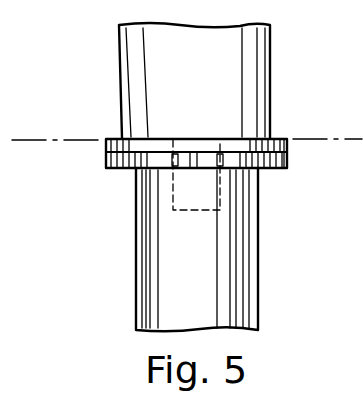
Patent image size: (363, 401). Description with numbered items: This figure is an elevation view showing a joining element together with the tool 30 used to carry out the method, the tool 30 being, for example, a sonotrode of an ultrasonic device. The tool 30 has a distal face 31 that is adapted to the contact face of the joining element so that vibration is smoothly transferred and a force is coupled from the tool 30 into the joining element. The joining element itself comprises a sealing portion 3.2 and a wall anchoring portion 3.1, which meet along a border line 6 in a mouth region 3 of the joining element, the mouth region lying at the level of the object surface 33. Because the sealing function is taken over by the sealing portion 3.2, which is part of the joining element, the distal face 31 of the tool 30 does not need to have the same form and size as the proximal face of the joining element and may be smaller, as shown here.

The mouth region 3 is at (180, 164).
The wall anchoring portion 3.1 is at (275, 137).
The sealing portion 3.2 is at (268, 169).
The border line 6 is at (289, 154).
The tool 30 is at (272, 44).
The distal face 31 is at (130, 151).
The object surface 33 is at (37, 140).